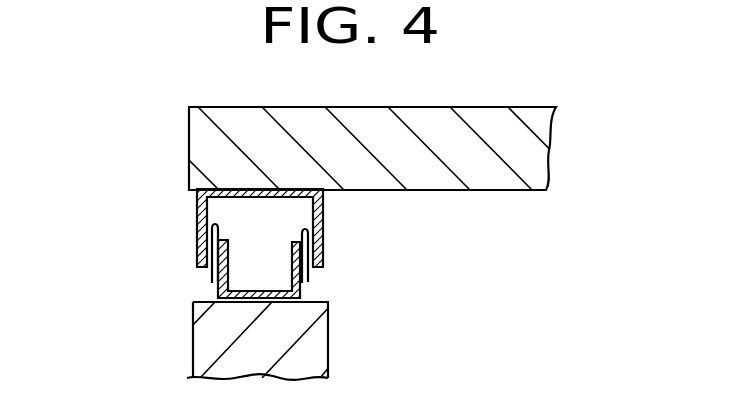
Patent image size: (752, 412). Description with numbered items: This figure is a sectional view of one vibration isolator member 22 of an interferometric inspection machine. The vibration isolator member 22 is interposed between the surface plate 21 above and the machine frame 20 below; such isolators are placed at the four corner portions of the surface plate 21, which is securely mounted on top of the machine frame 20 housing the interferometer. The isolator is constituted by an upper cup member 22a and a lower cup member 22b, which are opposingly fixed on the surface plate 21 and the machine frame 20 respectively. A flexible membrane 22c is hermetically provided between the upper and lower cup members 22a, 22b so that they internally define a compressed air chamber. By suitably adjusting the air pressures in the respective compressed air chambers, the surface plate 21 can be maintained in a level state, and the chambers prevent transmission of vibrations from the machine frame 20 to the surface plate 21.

The machine frame 20 is at (320, 352).
The surface plate 21 is at (196, 145).
The vibration isolator member 22 is at (263, 249).
The upper cup member 22a is at (197, 215).
The lower cup member 22b is at (300, 291).
The flexible membrane 22c is at (212, 281).